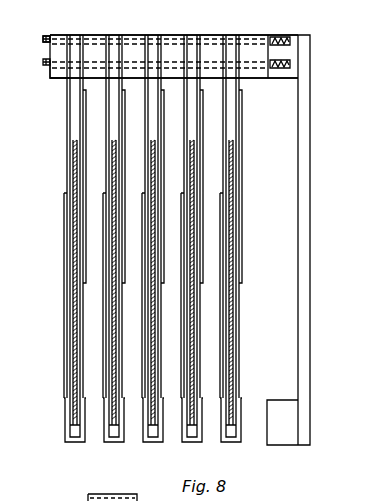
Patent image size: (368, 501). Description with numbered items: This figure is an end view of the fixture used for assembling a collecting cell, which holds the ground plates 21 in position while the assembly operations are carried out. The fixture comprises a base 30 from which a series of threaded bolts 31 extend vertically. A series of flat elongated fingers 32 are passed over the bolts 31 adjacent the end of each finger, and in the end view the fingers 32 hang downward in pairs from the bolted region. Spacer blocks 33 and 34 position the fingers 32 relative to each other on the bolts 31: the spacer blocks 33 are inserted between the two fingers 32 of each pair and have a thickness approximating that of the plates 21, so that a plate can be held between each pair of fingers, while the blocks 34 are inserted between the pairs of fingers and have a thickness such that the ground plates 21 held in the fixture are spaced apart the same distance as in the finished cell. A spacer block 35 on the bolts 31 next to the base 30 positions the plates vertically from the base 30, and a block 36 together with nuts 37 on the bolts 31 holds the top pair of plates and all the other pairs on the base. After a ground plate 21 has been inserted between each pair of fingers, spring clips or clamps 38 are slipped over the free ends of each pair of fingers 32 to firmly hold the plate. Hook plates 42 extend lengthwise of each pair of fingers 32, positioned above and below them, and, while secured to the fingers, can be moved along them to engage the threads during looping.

The base 30 is at (296, 55).
The threaded bolts 31 is at (44, 62).
The flat elongated fingers 32 is at (122, 45).
The spacer blocks 33 is at (82, 35).
The spacer blocks 34 is at (178, 80).
The spacer block 35 is at (251, 35).
The block 36 is at (58, 80).
The nuts 37 is at (46, 35).
The spring clips or clamps 38 is at (75, 442).
The hook plates 42 is at (64, 246).
The ground plates 21 is at (73, 303).